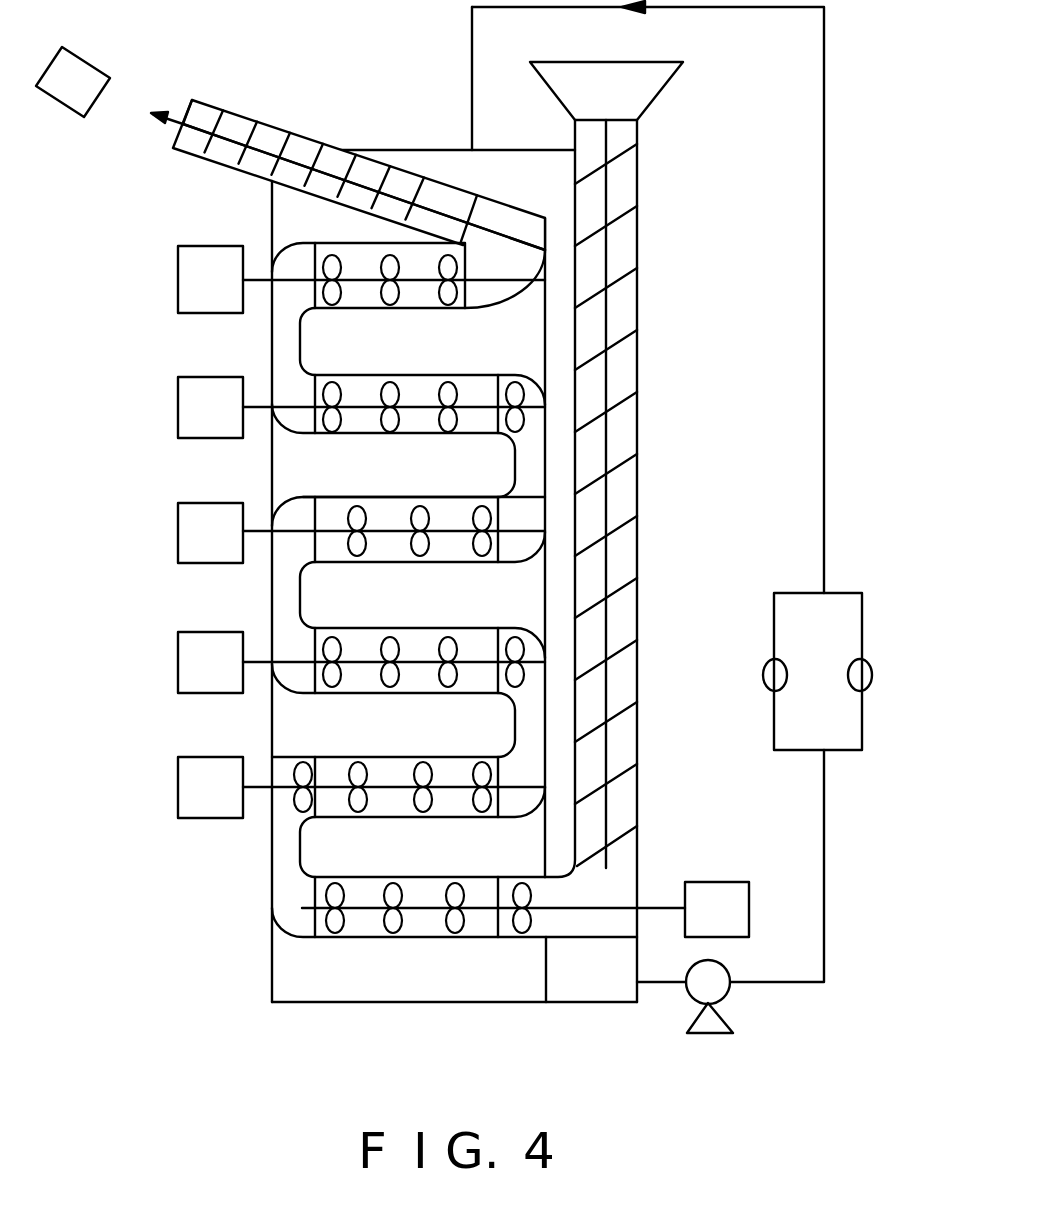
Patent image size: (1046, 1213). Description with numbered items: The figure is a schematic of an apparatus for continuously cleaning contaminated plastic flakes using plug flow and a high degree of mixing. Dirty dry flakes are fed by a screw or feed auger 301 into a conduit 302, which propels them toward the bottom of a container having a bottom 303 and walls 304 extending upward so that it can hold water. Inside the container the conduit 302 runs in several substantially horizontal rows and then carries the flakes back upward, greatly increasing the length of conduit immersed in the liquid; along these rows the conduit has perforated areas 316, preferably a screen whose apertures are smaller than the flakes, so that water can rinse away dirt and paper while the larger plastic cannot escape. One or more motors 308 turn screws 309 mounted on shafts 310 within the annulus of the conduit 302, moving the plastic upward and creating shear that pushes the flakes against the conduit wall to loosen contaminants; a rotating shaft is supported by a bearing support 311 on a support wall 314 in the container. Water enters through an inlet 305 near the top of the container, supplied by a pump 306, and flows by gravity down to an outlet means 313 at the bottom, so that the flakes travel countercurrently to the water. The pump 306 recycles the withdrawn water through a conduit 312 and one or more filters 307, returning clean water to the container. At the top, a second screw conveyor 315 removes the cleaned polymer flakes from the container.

The feed auger 301 is at (637, 125).
The conduit 302 is at (637, 283).
The bottom 303 is at (429, 1005).
The walls 304 is at (262, 975).
The inlet 305 is at (472, 148).
The pump 306 is at (708, 1035).
The filter 307 is at (850, 667).
The motors 308 is at (79, 80).
The screws 309 is at (395, 640).
The shafts 310 is at (418, 282).
The bearing support 311 is at (543, 548).
The conduit 312 is at (852, 372).
The outlet means 313 is at (660, 996).
The support wall 314 is at (545, 350).
The second screw conveyor 315 is at (308, 126).
The perforated areas 316 is at (387, 313).